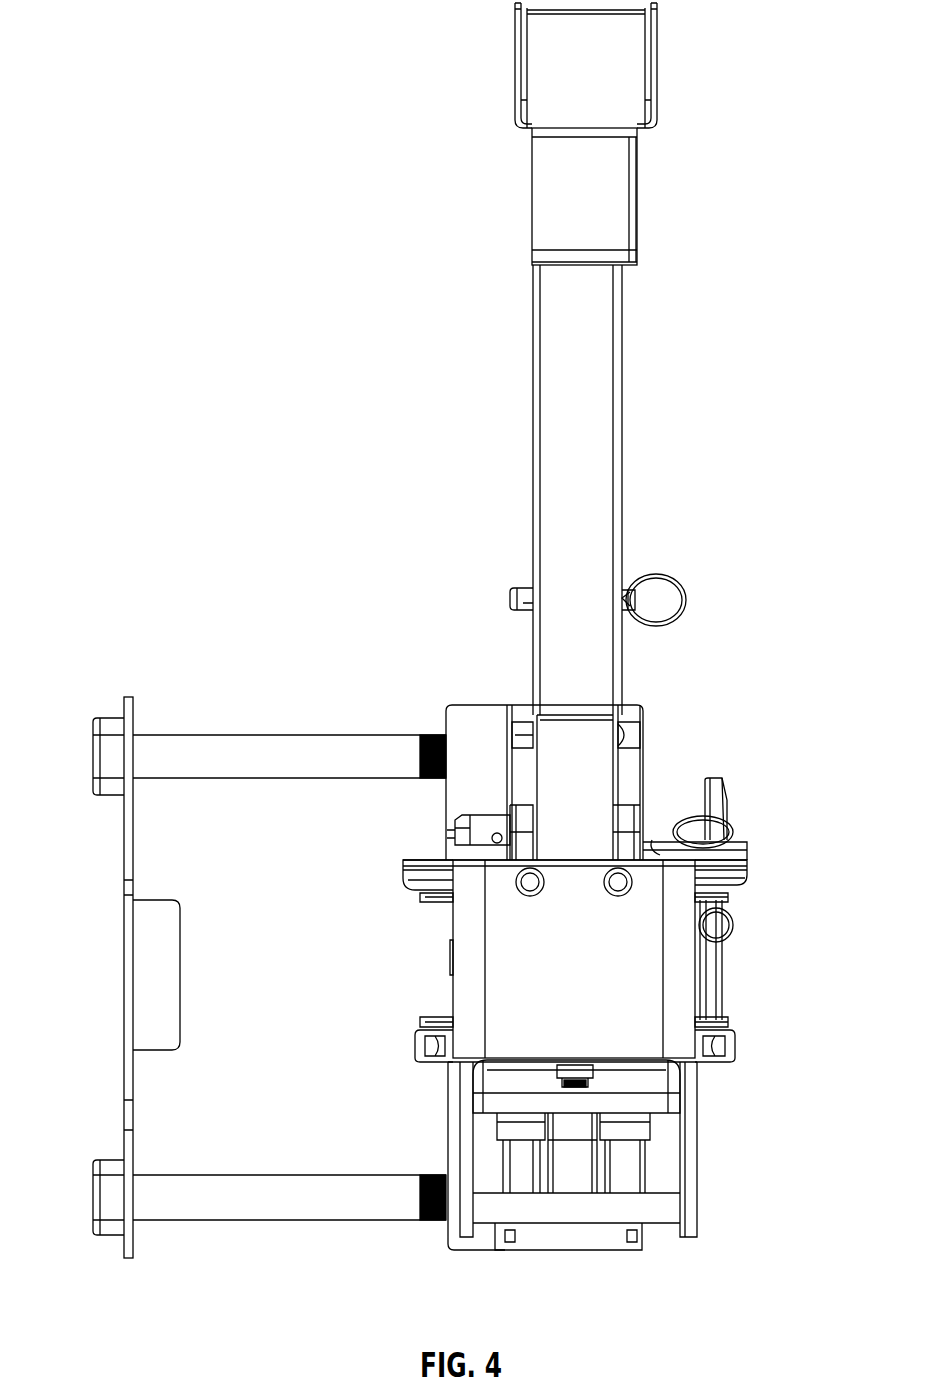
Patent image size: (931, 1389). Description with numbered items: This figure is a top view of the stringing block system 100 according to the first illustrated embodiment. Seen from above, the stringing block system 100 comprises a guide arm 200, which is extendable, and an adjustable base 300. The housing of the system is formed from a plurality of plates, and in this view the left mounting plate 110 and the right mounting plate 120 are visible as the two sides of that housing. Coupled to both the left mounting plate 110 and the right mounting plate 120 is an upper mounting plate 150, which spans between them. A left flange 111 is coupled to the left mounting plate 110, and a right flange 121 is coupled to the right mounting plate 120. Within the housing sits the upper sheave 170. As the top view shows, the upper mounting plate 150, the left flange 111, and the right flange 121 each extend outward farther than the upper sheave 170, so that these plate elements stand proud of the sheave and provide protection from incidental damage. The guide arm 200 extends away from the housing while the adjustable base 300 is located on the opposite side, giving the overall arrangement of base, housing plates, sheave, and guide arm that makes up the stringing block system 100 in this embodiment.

The stringing block system 100 is at (158, 40).
The guide arm 200 is at (608, 372).
The left mounting plate 110 is at (697, 1148).
The upper mounting plate 150 is at (430, 870).
The upper sheave 170 is at (440, 897).
The right flange 121 is at (420, 1045).
The left flange 111 is at (735, 1045).
The right mounting plate 120 is at (448, 1100).
The adjustable base 300 is at (572, 1252).